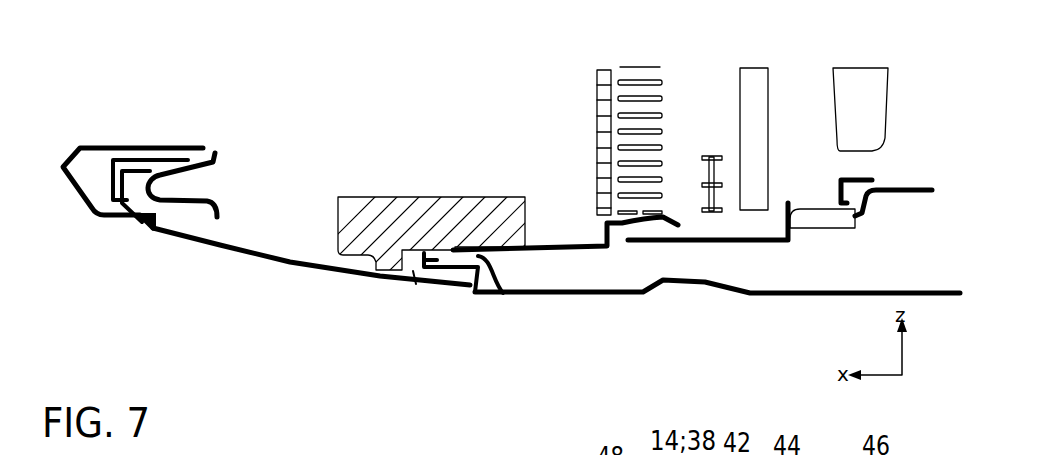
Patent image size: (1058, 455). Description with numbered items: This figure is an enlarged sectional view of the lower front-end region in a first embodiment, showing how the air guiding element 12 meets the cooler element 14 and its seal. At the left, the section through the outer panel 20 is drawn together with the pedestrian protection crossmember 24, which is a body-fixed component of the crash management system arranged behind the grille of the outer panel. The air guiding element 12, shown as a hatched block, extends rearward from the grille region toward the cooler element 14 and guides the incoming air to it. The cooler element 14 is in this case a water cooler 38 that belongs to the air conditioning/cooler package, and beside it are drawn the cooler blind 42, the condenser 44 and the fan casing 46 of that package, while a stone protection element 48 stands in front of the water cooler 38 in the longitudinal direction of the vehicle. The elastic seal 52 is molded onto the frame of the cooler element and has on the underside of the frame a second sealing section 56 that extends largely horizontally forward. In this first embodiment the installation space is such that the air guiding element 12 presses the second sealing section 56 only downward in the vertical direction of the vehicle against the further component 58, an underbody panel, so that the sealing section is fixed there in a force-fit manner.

The air guiding element 12 is at (358, 238).
The cooler element 14 is at (645, 107).
The outer panel 20 is at (85, 197).
The pedestrian protection crossmember 24 is at (183, 202).
The water cooler 38 is at (638, 67).
The cooler blind 42 is at (712, 157).
The condenser 44 is at (753, 85).
The fan casing 46 is at (860, 85).
The stone protection element 48 is at (603, 73).
The elastic seal 52 is at (565, 190).
The second sealing section 56 is at (560, 245).
The further component 58 is at (477, 257).